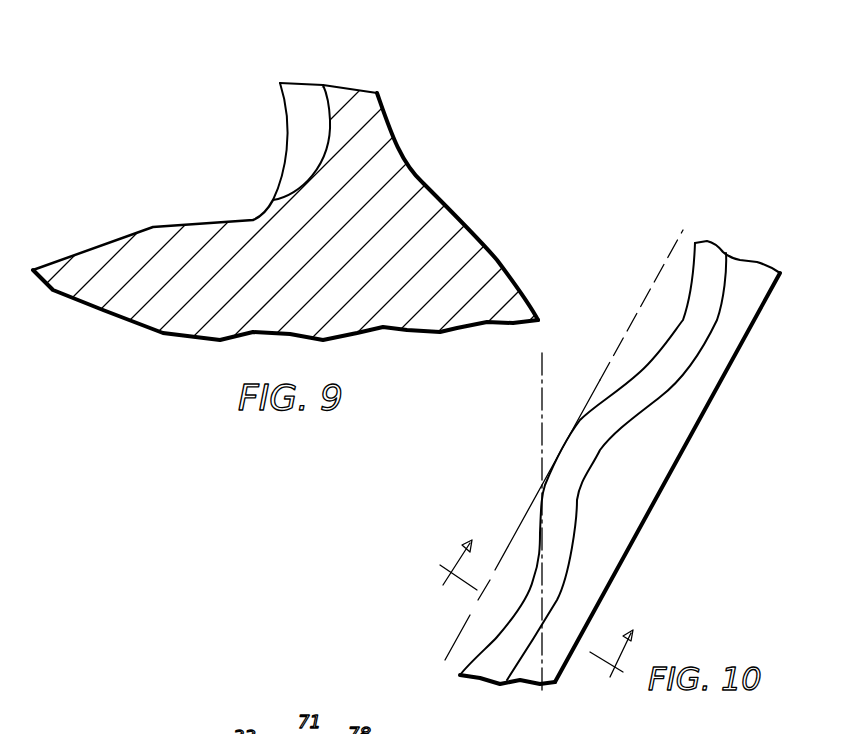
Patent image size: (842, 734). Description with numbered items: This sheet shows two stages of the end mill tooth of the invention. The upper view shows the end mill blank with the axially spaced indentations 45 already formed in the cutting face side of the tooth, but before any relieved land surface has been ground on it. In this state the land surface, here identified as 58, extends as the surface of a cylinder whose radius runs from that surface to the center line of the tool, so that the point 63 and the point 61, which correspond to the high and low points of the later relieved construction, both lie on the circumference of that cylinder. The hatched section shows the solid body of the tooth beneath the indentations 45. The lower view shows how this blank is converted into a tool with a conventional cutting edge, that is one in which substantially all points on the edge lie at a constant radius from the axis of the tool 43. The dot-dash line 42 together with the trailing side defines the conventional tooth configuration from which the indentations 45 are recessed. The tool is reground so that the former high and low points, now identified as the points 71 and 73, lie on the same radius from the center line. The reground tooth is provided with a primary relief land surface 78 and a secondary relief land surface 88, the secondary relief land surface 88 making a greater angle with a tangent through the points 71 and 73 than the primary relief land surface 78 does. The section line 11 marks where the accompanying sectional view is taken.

In FIG. 9, the land surface 58 is at (337, 85).
In FIG. 9, the point 61 is at (320, 85).
In FIG. 9, the point 63 is at (280, 83).
In FIG. 9, the indentations 45 is at (306, 150).
In FIG. 10, the dot-dash line 42 is at (523, 520).
In FIG. 10, the axis of the tool 43 is at (540, 403).
In FIG. 10, the point 71 is at (622, 427).
In FIG. 10, the point 73 is at (592, 402).
In FIG. 10, the primary relief land surface 78 is at (567, 462).
In FIG. 10, the secondary relief land surface 88 is at (612, 452).
In FIG. 10, the section line 11- 11 is at (547, 596).